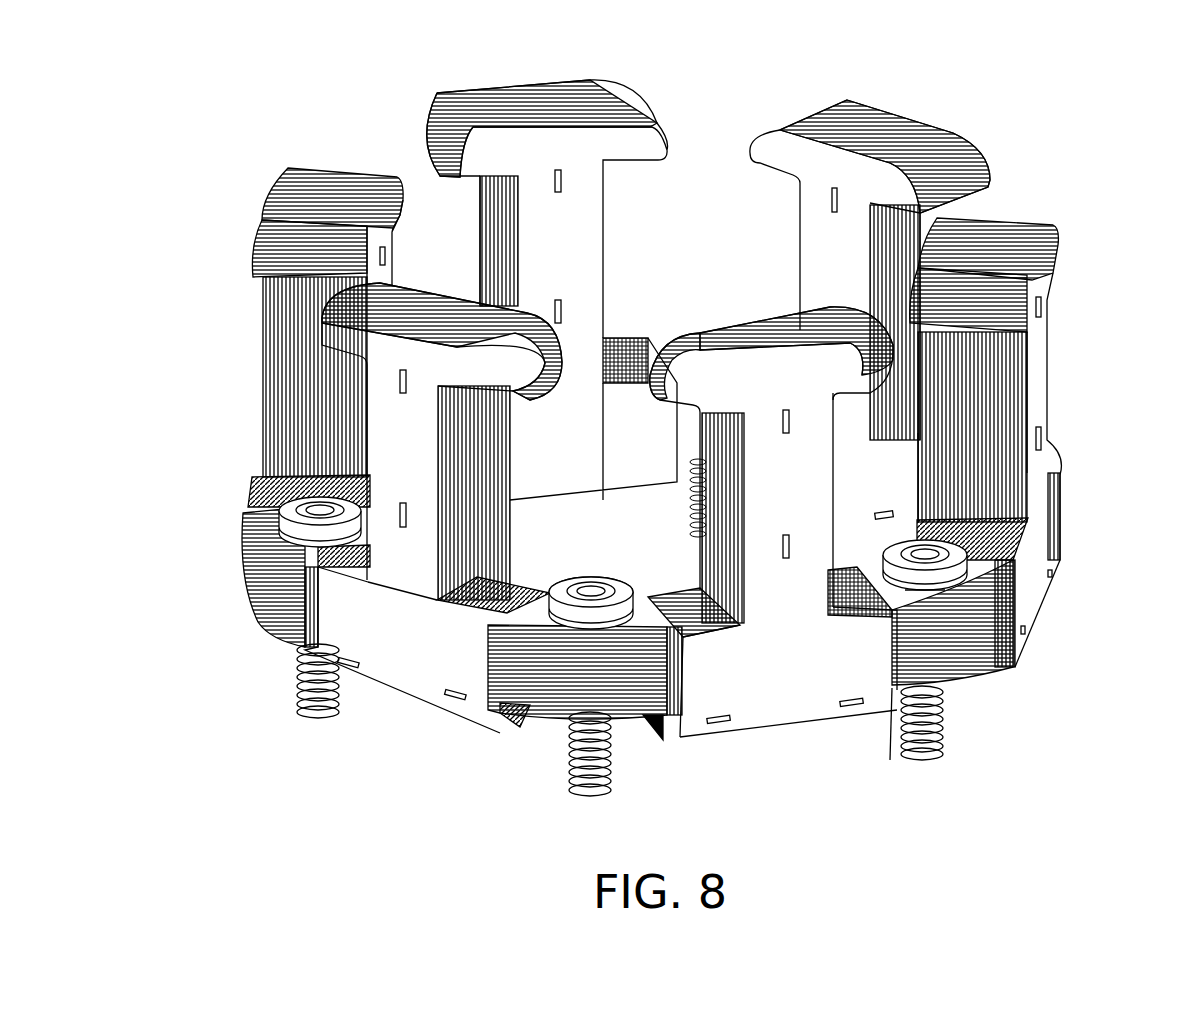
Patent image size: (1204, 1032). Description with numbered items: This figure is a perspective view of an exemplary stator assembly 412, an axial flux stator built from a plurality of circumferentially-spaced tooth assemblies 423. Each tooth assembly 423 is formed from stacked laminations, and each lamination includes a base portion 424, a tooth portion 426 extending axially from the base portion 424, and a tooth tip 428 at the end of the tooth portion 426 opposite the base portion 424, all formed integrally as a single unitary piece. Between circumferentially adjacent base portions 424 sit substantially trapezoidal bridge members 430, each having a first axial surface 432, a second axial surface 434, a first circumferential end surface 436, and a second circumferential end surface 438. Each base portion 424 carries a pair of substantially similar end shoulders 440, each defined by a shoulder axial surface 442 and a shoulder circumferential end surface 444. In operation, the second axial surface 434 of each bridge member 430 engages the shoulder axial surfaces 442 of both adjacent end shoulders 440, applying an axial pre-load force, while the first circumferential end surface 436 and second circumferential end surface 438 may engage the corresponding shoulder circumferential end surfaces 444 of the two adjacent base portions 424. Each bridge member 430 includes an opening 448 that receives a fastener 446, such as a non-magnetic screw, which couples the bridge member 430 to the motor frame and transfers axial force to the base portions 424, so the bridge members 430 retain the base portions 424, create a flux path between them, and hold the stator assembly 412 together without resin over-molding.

The stator assembly 412 is at (236, 105).
The tooth assembly 423 is at (1070, 413).
The base portion 424 is at (766, 670).
The tooth portion 426 is at (766, 484).
The tooth tip 428 is at (744, 376).
The bridge member 430 is at (547, 684).
The first axial surface 432 is at (642, 620).
The second axial surface 434 is at (552, 720).
The first circumferential end surface 436 is at (522, 602).
The second circumferential end surface 438 is at (657, 626).
The end shoulder 440 is at (690, 742).
The shoulder axial surface 442 is at (660, 740).
The shoulder circumferential end surface 444 is at (684, 662).
The fastener 446 is at (588, 800).
The opening 448 is at (918, 602).